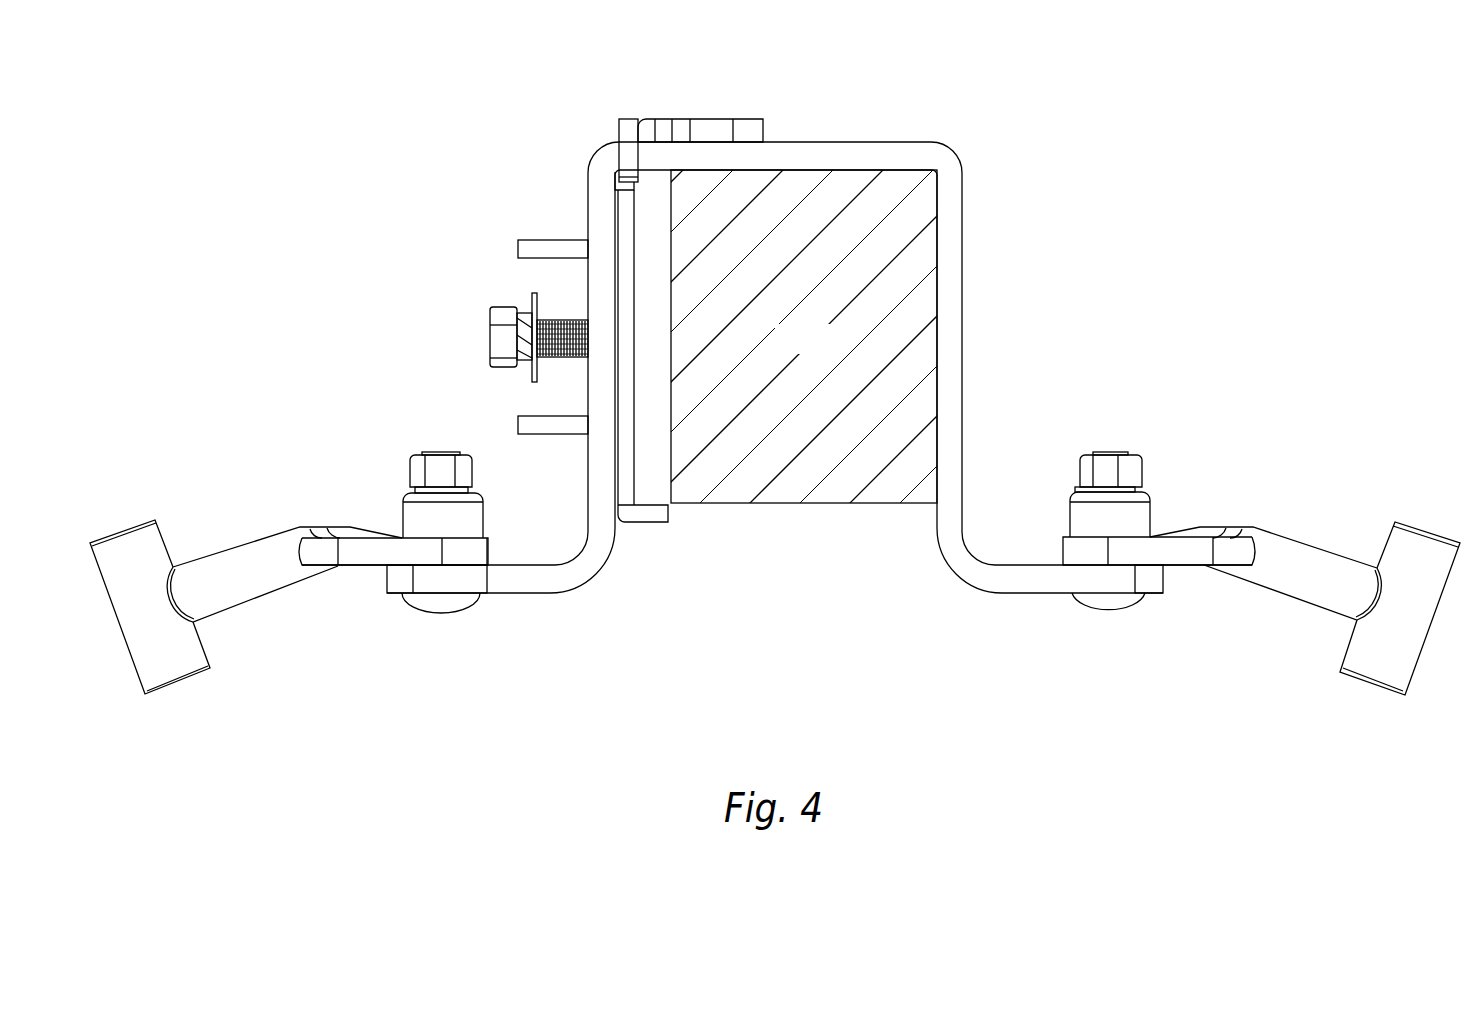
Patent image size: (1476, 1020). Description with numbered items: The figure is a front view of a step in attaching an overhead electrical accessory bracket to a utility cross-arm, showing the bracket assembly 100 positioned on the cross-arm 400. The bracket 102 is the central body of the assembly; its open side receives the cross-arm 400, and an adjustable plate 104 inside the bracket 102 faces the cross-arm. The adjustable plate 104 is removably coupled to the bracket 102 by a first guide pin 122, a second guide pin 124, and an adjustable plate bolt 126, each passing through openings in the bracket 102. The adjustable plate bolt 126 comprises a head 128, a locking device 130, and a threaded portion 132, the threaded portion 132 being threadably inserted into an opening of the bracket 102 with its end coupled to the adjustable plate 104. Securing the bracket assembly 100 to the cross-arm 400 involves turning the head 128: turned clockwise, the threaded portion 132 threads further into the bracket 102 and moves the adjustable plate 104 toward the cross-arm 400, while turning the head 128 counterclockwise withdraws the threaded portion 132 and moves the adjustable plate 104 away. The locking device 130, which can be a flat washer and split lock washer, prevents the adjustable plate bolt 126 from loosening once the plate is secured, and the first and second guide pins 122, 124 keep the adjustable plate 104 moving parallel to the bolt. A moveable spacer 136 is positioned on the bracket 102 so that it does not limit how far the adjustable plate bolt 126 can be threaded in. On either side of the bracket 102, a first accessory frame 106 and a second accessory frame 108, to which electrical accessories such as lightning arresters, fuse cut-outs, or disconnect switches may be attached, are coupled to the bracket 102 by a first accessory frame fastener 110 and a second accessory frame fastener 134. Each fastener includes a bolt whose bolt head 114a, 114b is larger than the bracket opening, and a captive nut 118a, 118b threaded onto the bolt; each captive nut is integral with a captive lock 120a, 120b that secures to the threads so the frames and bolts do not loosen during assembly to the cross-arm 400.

The bracket assembly 100 is at (943, 105).
The bracket 102 is at (588, 168).
The adjustable plate 104 is at (653, 522).
The first accessory frame 106 is at (265, 525).
The second accessory frame 108 is at (1343, 543).
The first accessory frame fastener 110 is at (440, 620).
The bolt head 114a is at (483, 595).
The bolt head 114b is at (1133, 608).
The captive nut 118a is at (405, 450).
The captive nut 118b is at (1157, 455).
The captive lock 120a is at (402, 517).
The captive lock 120b is at (1150, 505).
The first guide pin 122 is at (552, 240).
The second guide pin 124 is at (557, 435).
The adjustable plate bolt 126 is at (495, 288).
The head 128 is at (488, 340).
The locking device 130 is at (517, 380).
The threaded portion 132 is at (568, 318).
The second accessory frame fastener 134 is at (1118, 623).
The moveable spacer 136 is at (697, 120).
The cross-arm 400 is at (914, 510).